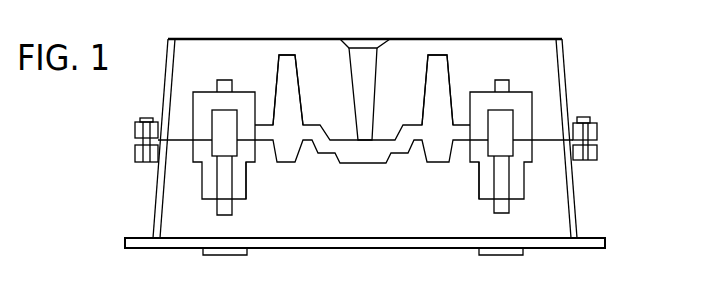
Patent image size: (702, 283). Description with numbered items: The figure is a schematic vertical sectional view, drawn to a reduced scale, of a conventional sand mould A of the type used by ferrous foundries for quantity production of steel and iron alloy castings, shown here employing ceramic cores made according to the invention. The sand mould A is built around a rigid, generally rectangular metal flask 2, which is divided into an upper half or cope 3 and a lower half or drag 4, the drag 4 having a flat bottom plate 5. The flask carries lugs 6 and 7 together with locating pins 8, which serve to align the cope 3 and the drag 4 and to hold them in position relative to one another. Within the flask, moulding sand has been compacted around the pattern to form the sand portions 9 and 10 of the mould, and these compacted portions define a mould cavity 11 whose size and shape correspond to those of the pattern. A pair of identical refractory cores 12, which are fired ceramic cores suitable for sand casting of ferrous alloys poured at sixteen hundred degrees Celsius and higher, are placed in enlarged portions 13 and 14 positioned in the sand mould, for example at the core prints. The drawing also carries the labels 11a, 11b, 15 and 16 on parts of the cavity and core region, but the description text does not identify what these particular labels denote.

The metal flask 2 is at (578, 218).
The cope 3 is at (568, 78).
The drag 4 is at (152, 216).
The flat bottom plate 5 is at (442, 248).
The lug 6 is at (135, 153).
The lug 7 is at (135, 132).
The locating pin 8 is at (135, 142).
The sand portion 9 is at (302, 47).
The sand portion 10 is at (370, 232).
The mould cavity 11 is at (362, 132).
The workpiece left end portion 11a is at (240, 187).
The workpiece right end portion 11b is at (487, 183).
The refractory core 12 is at (216, 146).
The enlarged portion 13 is at (220, 83).
The enlarged portion 14 is at (219, 204).
The tool 15 is at (353, 92).
The workpiece lobe 16 is at (291, 73).
The sand mould A is at (140, 105).